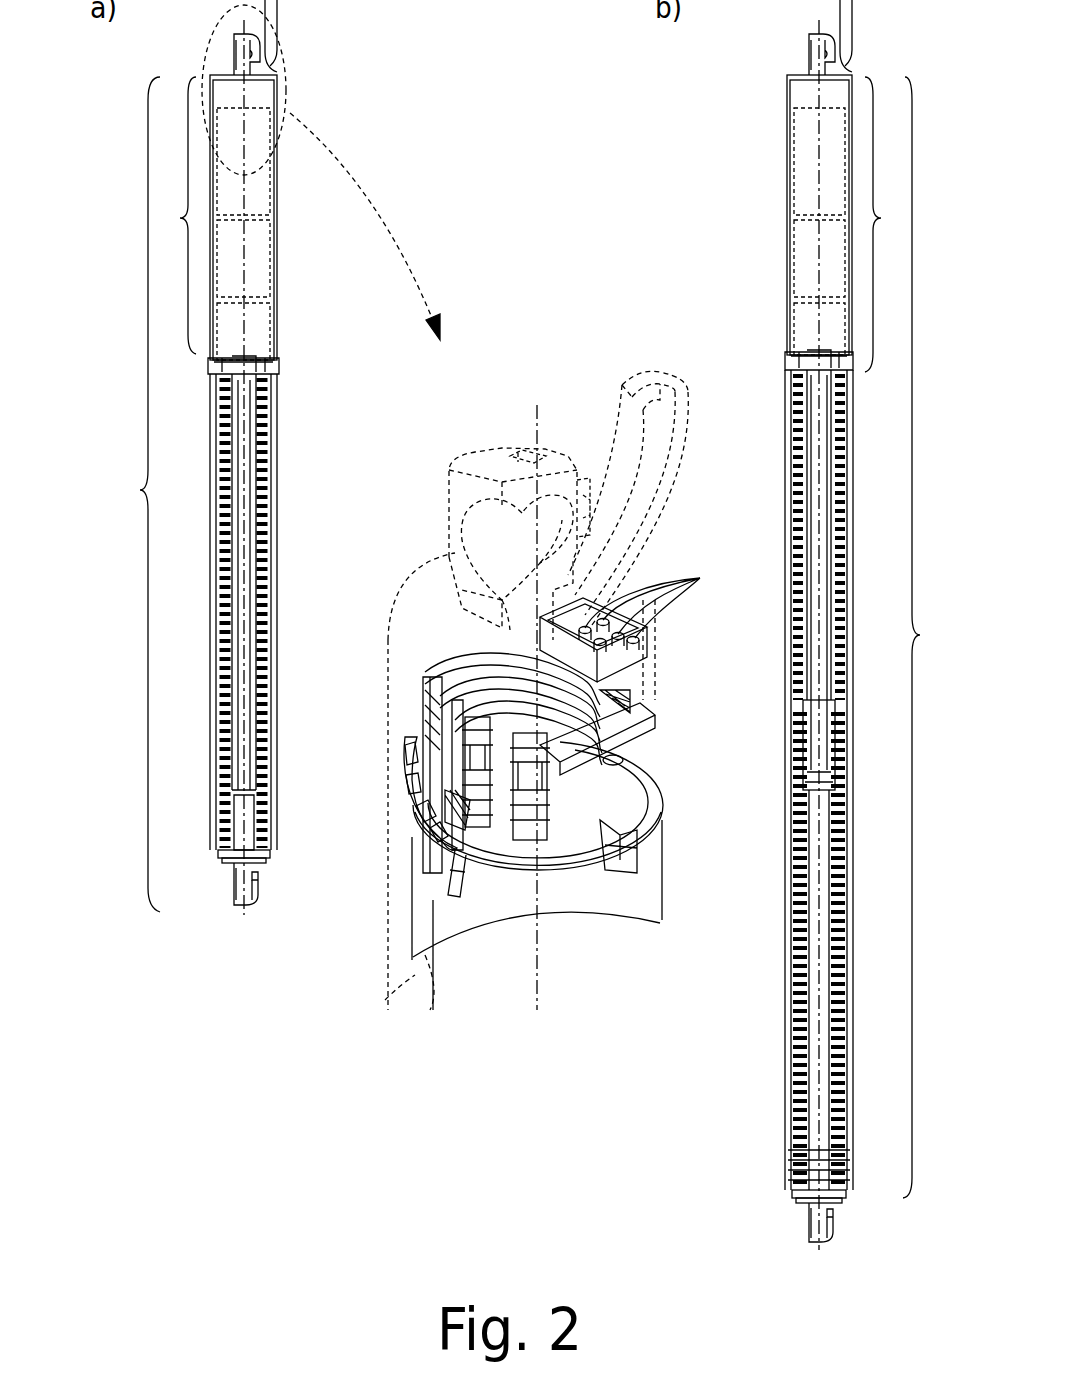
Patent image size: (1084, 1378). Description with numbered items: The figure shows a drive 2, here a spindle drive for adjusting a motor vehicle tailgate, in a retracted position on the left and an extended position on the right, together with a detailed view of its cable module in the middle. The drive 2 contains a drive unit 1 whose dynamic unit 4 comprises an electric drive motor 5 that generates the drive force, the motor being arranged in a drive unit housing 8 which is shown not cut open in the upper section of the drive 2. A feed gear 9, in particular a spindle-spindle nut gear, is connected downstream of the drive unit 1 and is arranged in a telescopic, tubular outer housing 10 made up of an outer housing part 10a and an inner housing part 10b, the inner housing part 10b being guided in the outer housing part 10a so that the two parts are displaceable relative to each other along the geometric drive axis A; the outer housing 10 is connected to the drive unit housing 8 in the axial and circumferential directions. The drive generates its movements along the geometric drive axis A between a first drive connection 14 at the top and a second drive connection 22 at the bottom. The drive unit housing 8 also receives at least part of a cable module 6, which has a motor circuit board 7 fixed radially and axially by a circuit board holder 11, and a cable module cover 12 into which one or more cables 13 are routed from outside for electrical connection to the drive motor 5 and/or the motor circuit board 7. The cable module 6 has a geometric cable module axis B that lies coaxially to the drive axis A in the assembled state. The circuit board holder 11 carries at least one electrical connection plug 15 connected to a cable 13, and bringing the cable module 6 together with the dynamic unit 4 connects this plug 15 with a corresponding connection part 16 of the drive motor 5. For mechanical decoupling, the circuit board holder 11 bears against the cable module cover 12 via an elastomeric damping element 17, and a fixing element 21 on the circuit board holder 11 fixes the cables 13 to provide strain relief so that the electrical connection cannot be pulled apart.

The drive unit 1 is at (262, 180).
The drive 2 is at (241, 515).
The dynamic unit 4 is at (305, 250).
The electric drive motor 5 is at (262, 190).
The cable module 6 is at (408, 500).
The motor circuit board 7 is at (605, 715).
The drive unit housing 8 is at (278, 292).
The feed gear 9 is at (282, 380).
The outer housing 10 is at (241, 667).
The outer housing part 10a is at (278, 385).
The inner housing part 10b is at (220, 852).
The circuit board holder 11 is at (420, 835).
The cable module cover 12 is at (420, 585).
The cables 13 is at (660, 597).
The first drive connection 14 is at (258, 52).
The electrical connection plug 15 is at (600, 850).
The connection part 16 is at (520, 850).
The damping element 17 is at (410, 790).
The fixing element 21 is at (620, 672).
The second drive connection 22 is at (238, 880).
The geometric drive axis A is at (277, 948).
The geometric cable module axis B is at (246, 905).